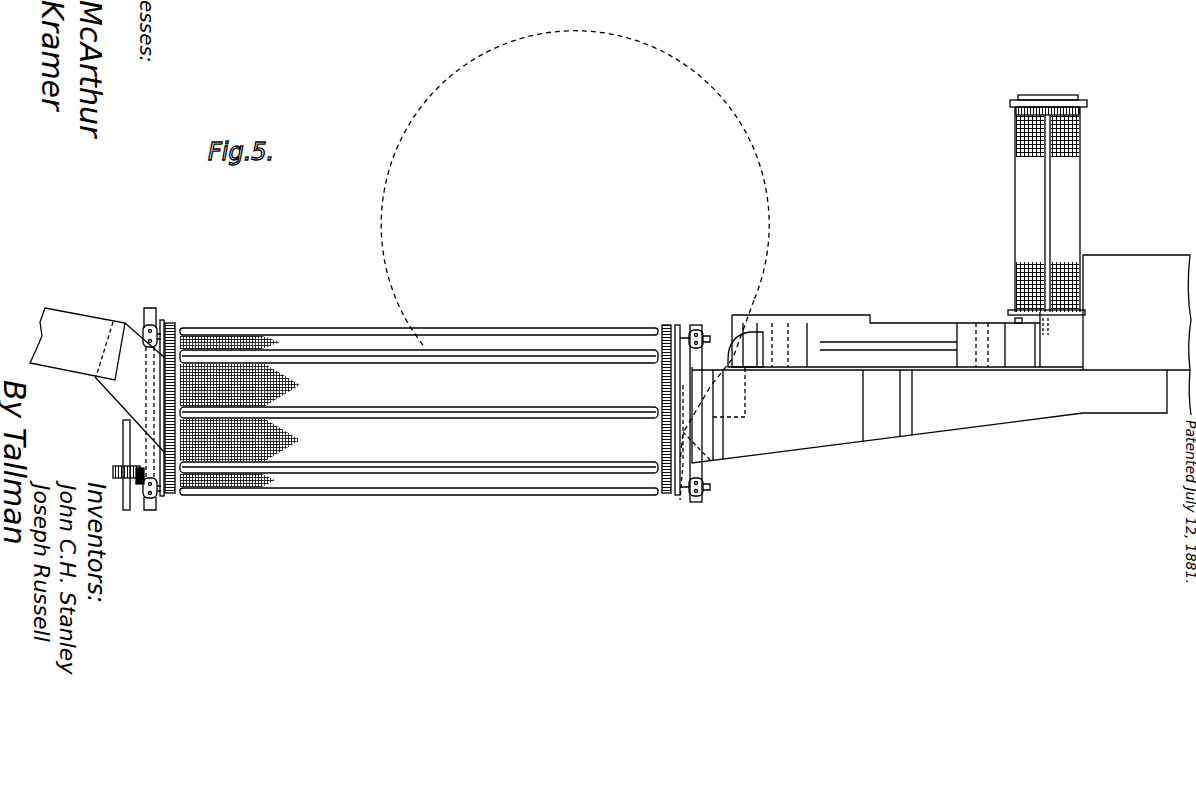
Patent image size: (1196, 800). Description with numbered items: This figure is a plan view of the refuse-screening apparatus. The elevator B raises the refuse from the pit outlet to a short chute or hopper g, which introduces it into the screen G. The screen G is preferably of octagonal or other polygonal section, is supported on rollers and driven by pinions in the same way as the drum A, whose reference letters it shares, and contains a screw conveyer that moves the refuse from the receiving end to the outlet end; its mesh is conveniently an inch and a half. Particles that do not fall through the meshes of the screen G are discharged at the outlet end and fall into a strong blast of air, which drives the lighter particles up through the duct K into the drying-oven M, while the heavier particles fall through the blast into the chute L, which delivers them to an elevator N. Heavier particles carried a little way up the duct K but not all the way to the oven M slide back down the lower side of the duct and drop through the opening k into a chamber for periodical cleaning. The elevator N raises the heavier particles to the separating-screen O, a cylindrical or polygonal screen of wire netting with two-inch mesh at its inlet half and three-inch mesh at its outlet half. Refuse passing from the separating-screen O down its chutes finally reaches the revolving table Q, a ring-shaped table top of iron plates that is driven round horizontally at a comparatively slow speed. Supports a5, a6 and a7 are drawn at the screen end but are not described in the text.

The elevator B is at (77, 344).
The chute or hopper g is at (130, 388).
The supporting posts a5 is at (201, 506).
The collar a6 is at (133, 476).
The rod a7 is at (124, 432).
The screen G is at (420, 403).
The drum A is at (881, 433).
The chute L is at (745, 349).
The elevator N is at (907, 339).
The separating-screen O is at (1047, 215).
The drying-oven M is at (1137, 335).
The duct K is at (929, 391).
The opening k is at (887, 405).
The revolving table Q is at (383, 240).